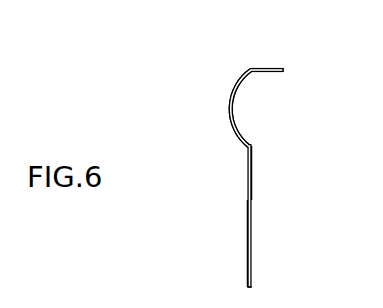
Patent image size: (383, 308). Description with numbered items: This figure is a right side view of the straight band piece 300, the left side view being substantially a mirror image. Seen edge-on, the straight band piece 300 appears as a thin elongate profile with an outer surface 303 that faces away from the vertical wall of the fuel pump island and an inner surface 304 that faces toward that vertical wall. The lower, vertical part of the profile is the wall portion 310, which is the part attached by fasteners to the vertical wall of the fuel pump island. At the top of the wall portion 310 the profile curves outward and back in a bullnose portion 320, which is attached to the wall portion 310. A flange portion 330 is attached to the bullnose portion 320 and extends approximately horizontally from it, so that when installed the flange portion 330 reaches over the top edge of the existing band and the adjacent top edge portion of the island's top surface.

The straight band piece 300 is at (247, 180).
The outer surface 303 is at (248, 242).
The inner surface 304 is at (252, 165).
The wall portion 310 is at (248, 268).
The bullnose portion 320 is at (229, 108).
The flange portion 330 is at (265, 67).